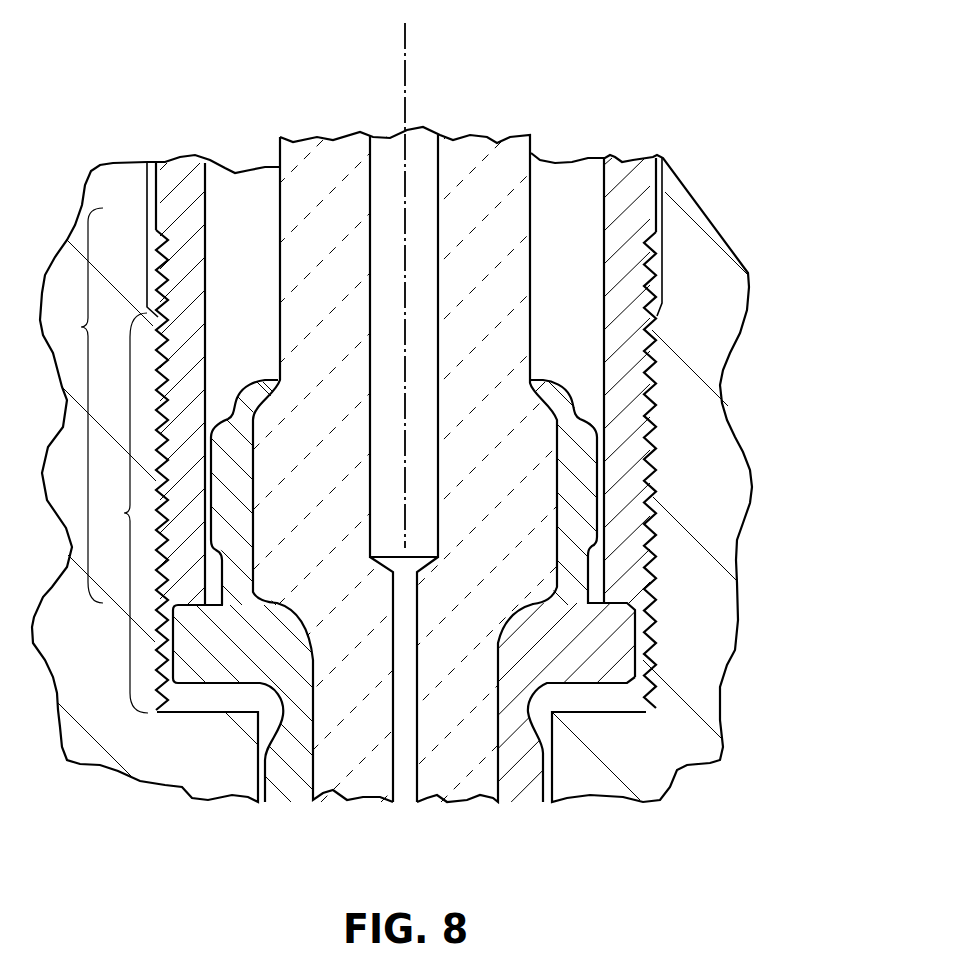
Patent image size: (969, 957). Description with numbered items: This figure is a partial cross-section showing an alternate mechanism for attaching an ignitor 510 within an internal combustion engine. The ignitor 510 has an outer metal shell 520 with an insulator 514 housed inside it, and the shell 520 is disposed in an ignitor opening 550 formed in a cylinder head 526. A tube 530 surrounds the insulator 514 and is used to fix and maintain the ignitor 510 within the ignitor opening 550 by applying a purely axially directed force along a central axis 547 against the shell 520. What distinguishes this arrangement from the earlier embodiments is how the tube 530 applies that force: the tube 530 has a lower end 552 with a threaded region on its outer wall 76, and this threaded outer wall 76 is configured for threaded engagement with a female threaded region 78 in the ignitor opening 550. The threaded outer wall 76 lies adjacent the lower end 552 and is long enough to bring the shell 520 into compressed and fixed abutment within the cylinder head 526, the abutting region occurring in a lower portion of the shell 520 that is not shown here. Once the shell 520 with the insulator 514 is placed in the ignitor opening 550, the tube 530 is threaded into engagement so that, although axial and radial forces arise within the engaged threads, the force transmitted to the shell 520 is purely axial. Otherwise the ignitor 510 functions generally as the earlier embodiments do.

The ignitor 510 is at (797, 257).
The insulator 514 is at (531, 148).
The outer metal shell 520 is at (596, 385).
The cylinder head 526 is at (708, 482).
The tube 530 is at (652, 242).
The central axis 547 is at (410, 73).
The ignitor opening 550 is at (155, 196).
The lower end 552 is at (647, 587).
The threaded outer wall 76 is at (77, 405).
The female threaded region 78 is at (121, 513).